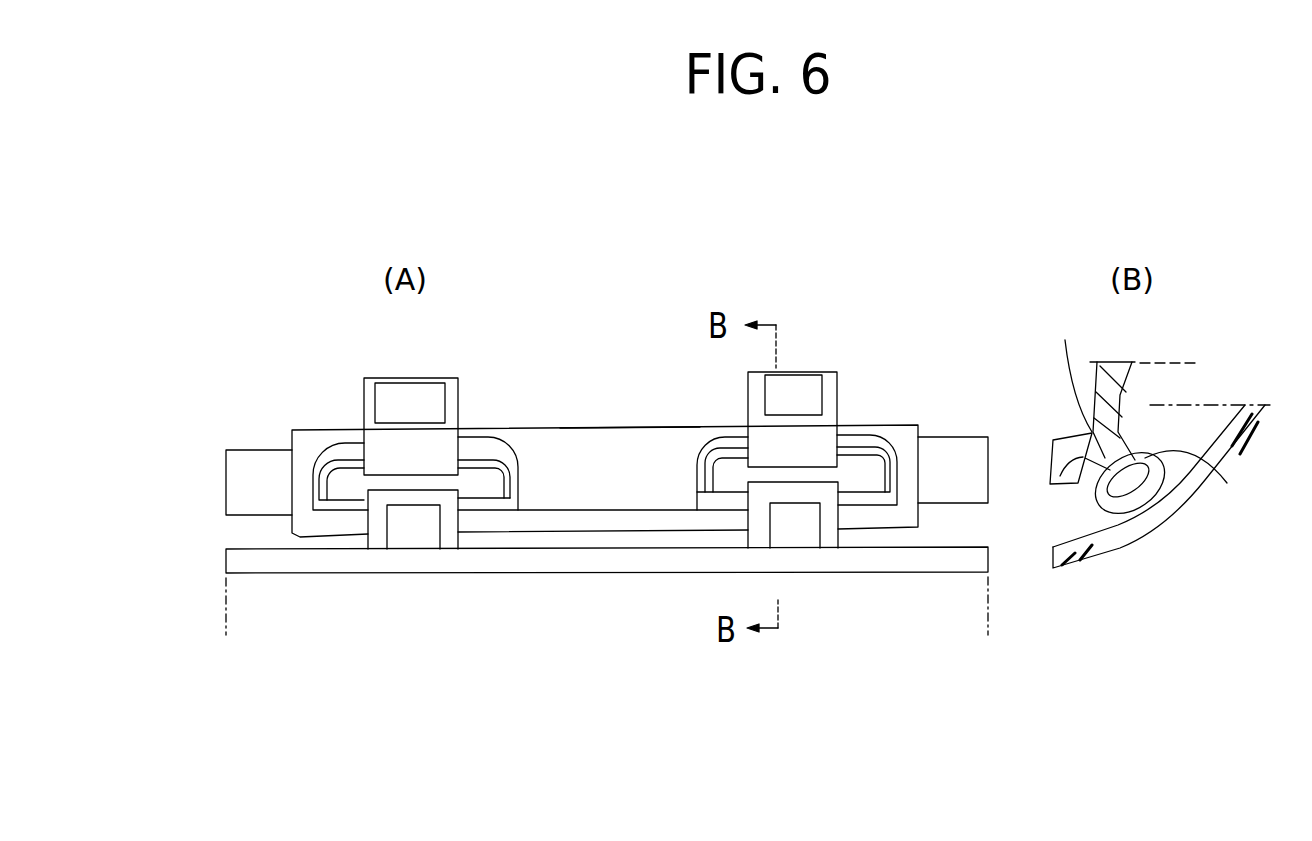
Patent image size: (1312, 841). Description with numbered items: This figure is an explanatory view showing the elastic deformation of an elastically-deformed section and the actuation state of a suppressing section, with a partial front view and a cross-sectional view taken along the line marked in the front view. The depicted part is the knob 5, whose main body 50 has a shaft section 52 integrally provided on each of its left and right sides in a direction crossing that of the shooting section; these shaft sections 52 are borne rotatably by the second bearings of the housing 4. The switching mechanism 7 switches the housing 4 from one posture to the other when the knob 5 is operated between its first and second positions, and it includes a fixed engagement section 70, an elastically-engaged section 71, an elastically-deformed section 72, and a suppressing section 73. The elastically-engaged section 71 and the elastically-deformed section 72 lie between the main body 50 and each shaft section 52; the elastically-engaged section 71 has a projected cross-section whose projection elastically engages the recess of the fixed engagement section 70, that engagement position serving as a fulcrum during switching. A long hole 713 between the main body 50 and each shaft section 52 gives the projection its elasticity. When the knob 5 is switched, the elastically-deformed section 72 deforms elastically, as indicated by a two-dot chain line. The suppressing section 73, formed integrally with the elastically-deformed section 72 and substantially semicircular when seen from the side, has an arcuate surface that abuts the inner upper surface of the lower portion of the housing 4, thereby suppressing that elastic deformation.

The housing 4 is at (572, 576).
The knob 5 is at (630, 426).
The main body 50 is at (608, 457).
The shaft section 52 is at (243, 450).
The switching mechanism 7 is at (775, 481).
The fixed engagement section 70 is at (418, 457).
The elastically-engaged section 71 is at (465, 478).
The elastically-deformed section 72 is at (310, 537).
The suppressing section 73 is at (380, 543).
The long hole 713 is at (490, 445).